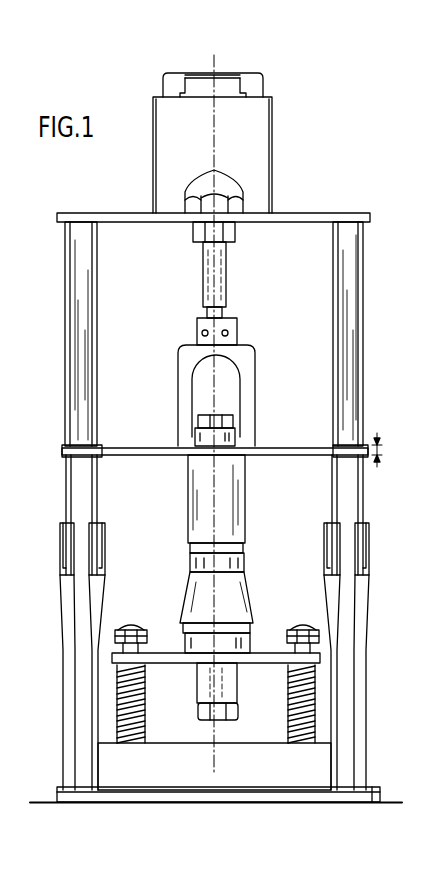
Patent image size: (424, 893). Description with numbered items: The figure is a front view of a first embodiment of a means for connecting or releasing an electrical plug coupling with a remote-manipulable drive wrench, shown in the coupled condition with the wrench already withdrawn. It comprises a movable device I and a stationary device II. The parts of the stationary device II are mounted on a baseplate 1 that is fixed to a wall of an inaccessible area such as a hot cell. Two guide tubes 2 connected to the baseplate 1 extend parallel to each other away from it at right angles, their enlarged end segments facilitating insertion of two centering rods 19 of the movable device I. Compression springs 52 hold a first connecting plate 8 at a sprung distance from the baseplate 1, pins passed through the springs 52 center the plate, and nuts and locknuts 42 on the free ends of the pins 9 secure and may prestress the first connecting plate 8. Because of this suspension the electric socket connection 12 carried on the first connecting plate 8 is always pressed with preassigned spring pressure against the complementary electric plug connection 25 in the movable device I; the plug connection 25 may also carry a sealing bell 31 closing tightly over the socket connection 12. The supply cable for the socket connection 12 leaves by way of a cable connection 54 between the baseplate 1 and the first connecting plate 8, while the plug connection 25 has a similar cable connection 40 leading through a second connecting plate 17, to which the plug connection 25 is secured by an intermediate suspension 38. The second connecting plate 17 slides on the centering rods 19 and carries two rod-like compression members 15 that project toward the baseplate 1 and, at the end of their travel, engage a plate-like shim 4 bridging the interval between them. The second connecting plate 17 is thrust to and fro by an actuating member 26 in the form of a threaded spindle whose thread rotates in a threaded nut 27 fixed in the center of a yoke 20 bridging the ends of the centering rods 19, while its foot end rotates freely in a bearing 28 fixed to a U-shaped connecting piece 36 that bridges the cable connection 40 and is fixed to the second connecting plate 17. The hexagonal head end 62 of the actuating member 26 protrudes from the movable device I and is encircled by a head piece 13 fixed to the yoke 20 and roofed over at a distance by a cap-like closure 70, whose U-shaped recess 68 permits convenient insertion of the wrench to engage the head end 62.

The baseplate 1 is at (374, 790).
The guide tubes 2 is at (63, 590).
The shim 4 is at (247, 777).
The first connecting plate 8 is at (250, 637).
The pins 9 is at (118, 682).
The electric socket connection 12 is at (190, 636).
The head piece 13 is at (273, 133).
The compression members 15 is at (77, 480).
The second connecting plate 17 is at (150, 458).
The centering rods 19 is at (77, 357).
The yoke 20 is at (301, 214).
The electric plug connection 25 is at (192, 549).
The actuating member 26 is at (197, 268).
The threaded nut 27 is at (230, 235).
The bearing 28 is at (233, 326).
The sealing bell 31 is at (193, 585).
The connecting piece 36 is at (249, 357).
The intermediate suspension 38 is at (238, 491).
The cable connection 40 is at (233, 432).
The nuts and locknuts 42 is at (305, 634).
The compression springs 52 is at (302, 692).
The cable connection 54 is at (200, 684).
The head end 62 is at (200, 180).
The U-shaped recess 68 is at (216, 73).
The cap-like closure 70 is at (262, 77).
The movable device I is at (296, 371).
The stationary device II is at (378, 701).